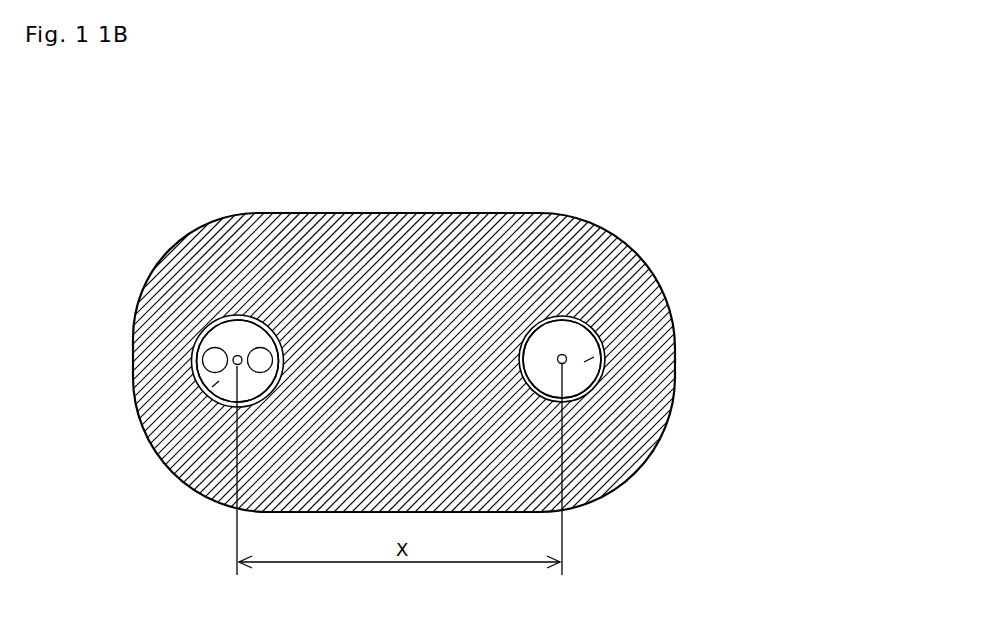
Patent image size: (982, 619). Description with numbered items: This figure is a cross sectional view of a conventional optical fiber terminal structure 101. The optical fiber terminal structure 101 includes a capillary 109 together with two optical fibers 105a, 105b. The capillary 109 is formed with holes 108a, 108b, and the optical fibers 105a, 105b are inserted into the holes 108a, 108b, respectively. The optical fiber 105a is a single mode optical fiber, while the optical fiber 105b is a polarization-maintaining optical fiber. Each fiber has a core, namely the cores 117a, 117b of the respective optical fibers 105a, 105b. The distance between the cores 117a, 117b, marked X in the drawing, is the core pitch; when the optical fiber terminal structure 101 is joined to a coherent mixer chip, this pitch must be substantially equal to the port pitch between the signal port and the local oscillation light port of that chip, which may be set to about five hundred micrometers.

The optical fiber terminal structure 101 is at (483, 318).
The capillary 109 is at (586, 240).
The optical fiber 105a is at (606, 355).
The optical fiber 105b is at (191, 402).
The hole 108a is at (588, 402).
The hole 108b is at (221, 318).
The core 117a is at (565, 354).
The core 117b is at (238, 355).